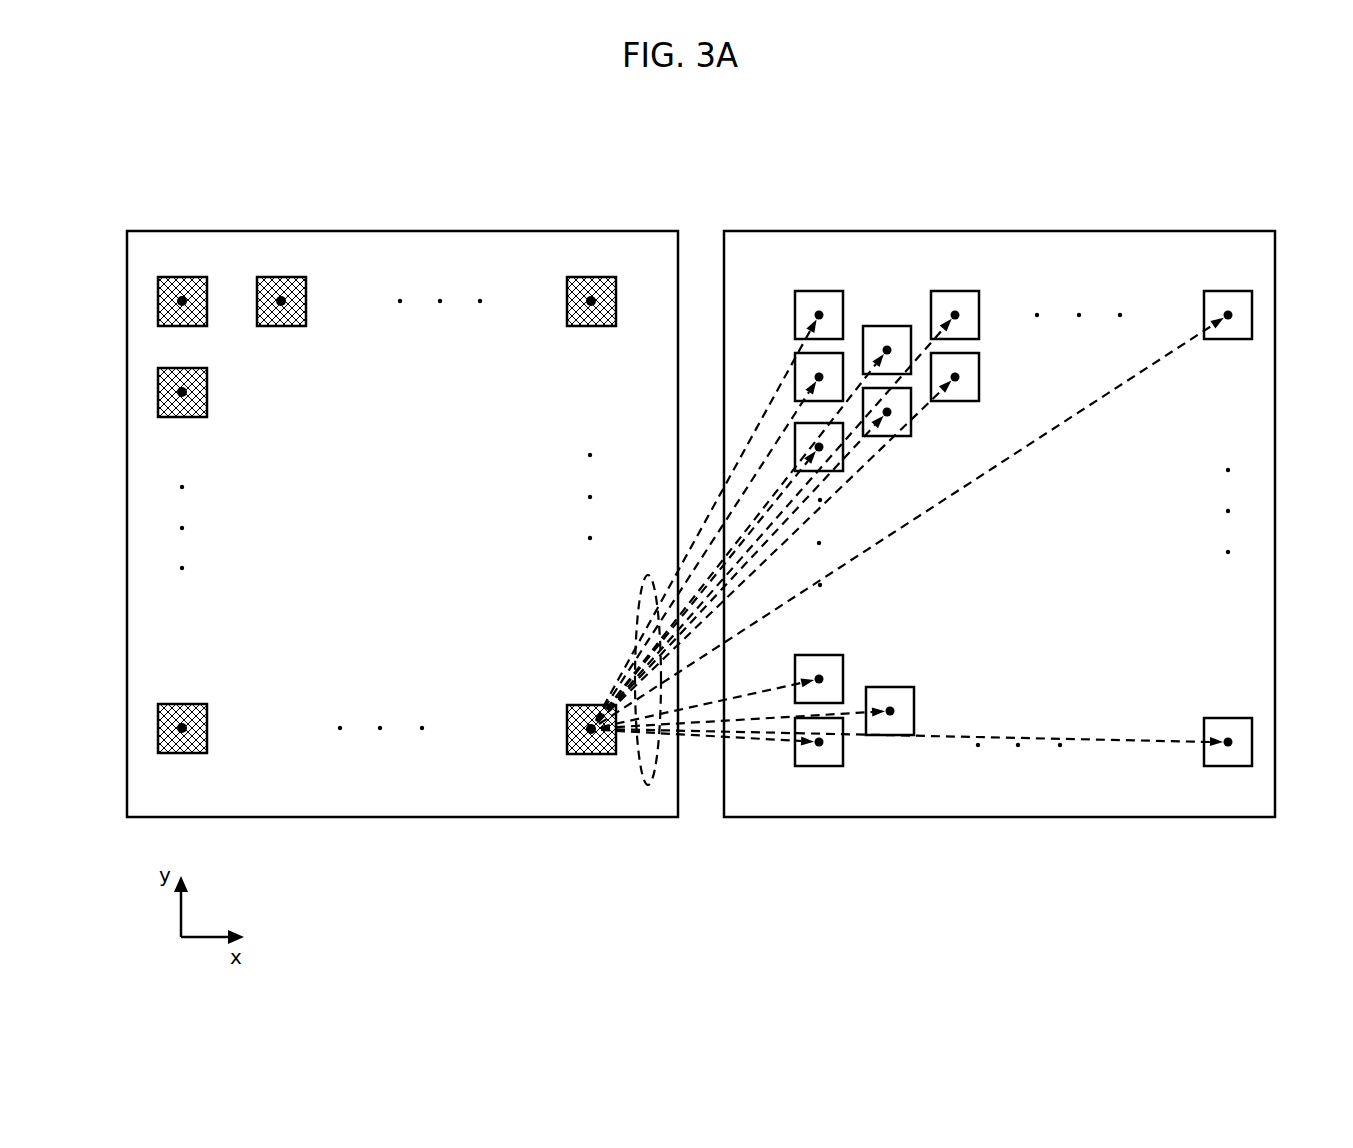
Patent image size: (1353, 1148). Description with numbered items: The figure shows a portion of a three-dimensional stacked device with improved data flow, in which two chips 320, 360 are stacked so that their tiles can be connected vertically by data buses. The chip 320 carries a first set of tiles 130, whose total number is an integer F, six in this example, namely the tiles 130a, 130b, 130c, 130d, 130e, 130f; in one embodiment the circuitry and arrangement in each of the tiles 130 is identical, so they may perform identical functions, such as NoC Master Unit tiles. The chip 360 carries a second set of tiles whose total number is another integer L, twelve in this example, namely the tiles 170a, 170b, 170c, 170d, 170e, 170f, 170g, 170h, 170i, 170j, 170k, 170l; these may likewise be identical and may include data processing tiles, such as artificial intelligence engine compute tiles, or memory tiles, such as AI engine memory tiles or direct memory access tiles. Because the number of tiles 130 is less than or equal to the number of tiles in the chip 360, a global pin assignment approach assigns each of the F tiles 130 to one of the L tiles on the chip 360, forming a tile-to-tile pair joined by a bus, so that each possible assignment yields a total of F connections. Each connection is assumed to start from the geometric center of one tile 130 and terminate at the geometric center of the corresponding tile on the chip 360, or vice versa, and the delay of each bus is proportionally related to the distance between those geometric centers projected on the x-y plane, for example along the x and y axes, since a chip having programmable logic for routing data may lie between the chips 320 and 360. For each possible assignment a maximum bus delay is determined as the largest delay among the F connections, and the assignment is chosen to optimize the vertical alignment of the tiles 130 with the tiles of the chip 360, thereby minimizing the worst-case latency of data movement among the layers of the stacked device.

The chip 320 is at (395, 231).
The chip 360 is at (1006, 231).
The tiles 130 is at (636, 623).
The tile 130a is at (182, 277).
The tile 130b is at (281, 277).
The tile 130c is at (591, 277).
The tile 130d is at (182, 368).
The tile 130e is at (182, 753).
The tile 130f is at (591, 754).
The tile 170a is at (819, 291).
The tile 170b is at (887, 326).
The tile 170c is at (955, 291).
The tile 170d is at (1228, 291).
The tile 170e is at (795, 375).
The tile 170f is at (911, 425).
The tile 170g is at (979, 376).
The tile 170h is at (843, 467).
The tile 170i is at (819, 655).
The tile 170j is at (819, 766).
The tile 170k is at (890, 687).
The tile 170l is at (1228, 718).